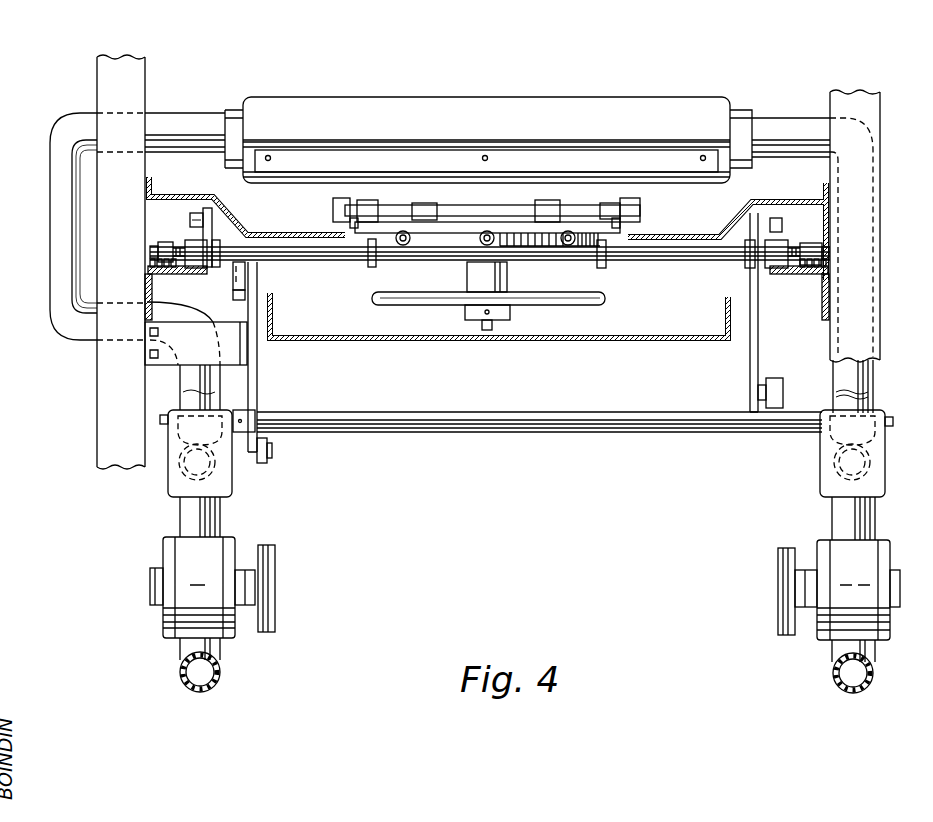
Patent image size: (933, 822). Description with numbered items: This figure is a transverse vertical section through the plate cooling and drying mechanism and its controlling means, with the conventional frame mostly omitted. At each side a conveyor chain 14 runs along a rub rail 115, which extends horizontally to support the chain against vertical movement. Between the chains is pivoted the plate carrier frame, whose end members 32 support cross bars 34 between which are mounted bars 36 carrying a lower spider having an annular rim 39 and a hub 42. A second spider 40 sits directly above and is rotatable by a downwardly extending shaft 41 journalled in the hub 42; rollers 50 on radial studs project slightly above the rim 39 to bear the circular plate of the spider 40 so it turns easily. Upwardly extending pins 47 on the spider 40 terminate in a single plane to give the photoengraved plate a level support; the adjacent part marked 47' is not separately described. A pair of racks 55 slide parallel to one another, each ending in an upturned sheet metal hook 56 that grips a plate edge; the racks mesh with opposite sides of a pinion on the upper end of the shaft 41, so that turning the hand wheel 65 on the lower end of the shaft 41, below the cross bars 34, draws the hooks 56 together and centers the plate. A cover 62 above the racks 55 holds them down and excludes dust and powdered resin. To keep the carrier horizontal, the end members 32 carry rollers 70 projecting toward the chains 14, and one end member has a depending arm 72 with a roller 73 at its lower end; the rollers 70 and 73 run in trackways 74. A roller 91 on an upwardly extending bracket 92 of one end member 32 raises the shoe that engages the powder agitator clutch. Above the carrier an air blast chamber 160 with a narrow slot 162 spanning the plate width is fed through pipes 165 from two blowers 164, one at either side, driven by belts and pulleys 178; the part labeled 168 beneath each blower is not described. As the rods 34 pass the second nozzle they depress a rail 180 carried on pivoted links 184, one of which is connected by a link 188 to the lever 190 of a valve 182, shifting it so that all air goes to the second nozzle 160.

The conveyor chains 14 is at (157, 242).
The end members 32 is at (218, 248).
The cross bars 34 is at (322, 258).
The bars 36 is at (368, 258).
The annular rim 39 is at (553, 240).
The second spider 40 is at (445, 222).
The shaft 41 is at (494, 330).
The hub 42 is at (505, 270).
The pins 47 is at (489, 201).
The clamp tab 47' is at (491, 227).
The rollers 50 is at (413, 246).
The racks 55 is at (393, 212).
The sheet metal hooks 56 is at (335, 204).
The cover 62 is at (465, 195).
The hand wheel 65 is at (600, 299).
The rollers 70 is at (203, 268).
The depending arm 72 is at (748, 362).
The roller 73 is at (778, 378).
The trackways 74 is at (174, 278).
The roller 91 is at (197, 214).
The bracket 92 is at (212, 222).
The rub rails 115 is at (150, 265).
The air blast chamber 160 is at (450, 100).
The narrow slot 162 is at (520, 180).
The blower 164 is at (175, 555).
The pipe 165 is at (50, 222).
The tube end 168 is at (183, 690).
The belts and pulleys 178 is at (272, 558).
The rail 180 is at (232, 284).
The valve 182 is at (170, 480).
The pivoted links 184 is at (259, 381).
The link 188 is at (272, 452).
The lever 190 is at (240, 452).